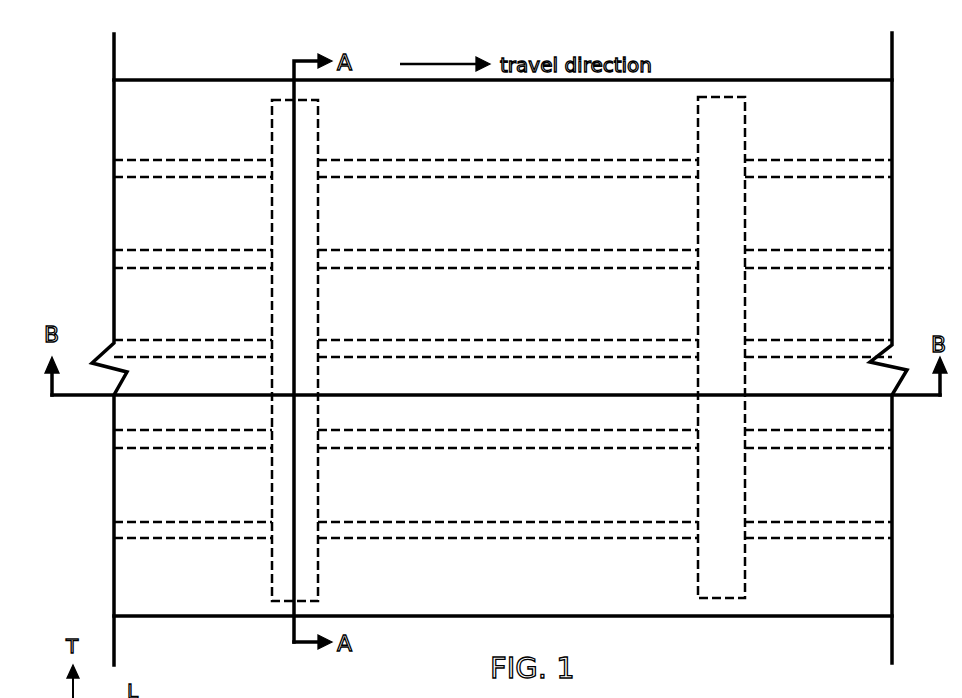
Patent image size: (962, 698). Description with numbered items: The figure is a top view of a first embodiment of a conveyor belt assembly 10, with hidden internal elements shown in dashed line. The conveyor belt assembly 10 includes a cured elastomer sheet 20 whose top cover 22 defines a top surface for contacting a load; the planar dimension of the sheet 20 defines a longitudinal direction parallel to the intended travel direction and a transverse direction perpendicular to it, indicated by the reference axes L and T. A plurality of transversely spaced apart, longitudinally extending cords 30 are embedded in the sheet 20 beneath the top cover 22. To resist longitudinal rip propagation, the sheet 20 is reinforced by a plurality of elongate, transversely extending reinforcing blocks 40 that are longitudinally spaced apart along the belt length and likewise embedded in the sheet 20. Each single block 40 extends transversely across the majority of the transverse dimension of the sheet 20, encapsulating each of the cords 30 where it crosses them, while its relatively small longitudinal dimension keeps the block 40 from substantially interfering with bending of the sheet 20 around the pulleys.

The conveyor belt assembly 10 is at (190, 48).
The elastomer sheet 20 is at (251, 79).
The top cover 22 is at (194, 229).
The cords 30 is at (483, 158).
The reinforcing blocks 40 is at (318, 303).